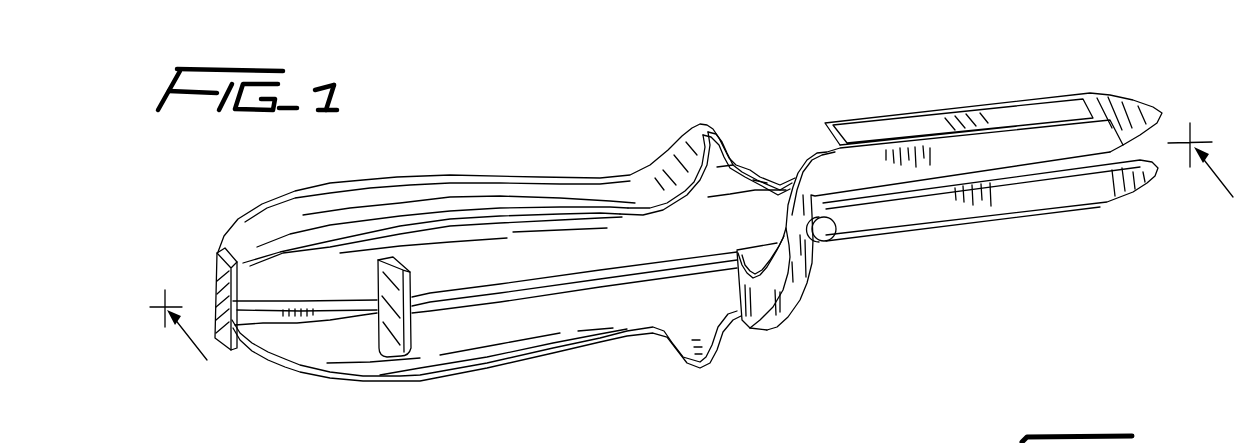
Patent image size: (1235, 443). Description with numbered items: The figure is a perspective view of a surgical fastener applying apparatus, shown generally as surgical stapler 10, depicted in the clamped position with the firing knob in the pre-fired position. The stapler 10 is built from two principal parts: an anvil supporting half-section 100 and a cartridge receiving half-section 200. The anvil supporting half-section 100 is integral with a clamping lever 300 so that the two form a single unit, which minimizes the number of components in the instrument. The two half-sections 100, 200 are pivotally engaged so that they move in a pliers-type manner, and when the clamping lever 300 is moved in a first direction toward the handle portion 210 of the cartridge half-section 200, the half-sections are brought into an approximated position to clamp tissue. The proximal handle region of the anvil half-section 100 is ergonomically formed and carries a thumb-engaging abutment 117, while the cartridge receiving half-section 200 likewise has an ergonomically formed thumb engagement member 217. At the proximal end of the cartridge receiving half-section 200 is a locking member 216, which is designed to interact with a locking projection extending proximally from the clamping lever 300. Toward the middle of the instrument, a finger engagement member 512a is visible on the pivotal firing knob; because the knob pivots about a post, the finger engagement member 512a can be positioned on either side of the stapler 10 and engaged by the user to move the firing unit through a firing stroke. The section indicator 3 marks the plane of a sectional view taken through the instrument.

The surgical stapler 10 is at (784, 78).
The section line 3- 3 is at (691, 248).
The anvil supporting half-section 100 is at (612, 359).
The thumb-engaging abutment 117 is at (682, 348).
The cartridge receiving half-section 200 is at (583, 141).
The handle portion 210 is at (403, 189).
The locking member 216 is at (216, 278).
The thumb engagement member 217 is at (685, 175).
The clamping lever 300 is at (498, 336).
The finger engagement member 512a is at (385, 332).